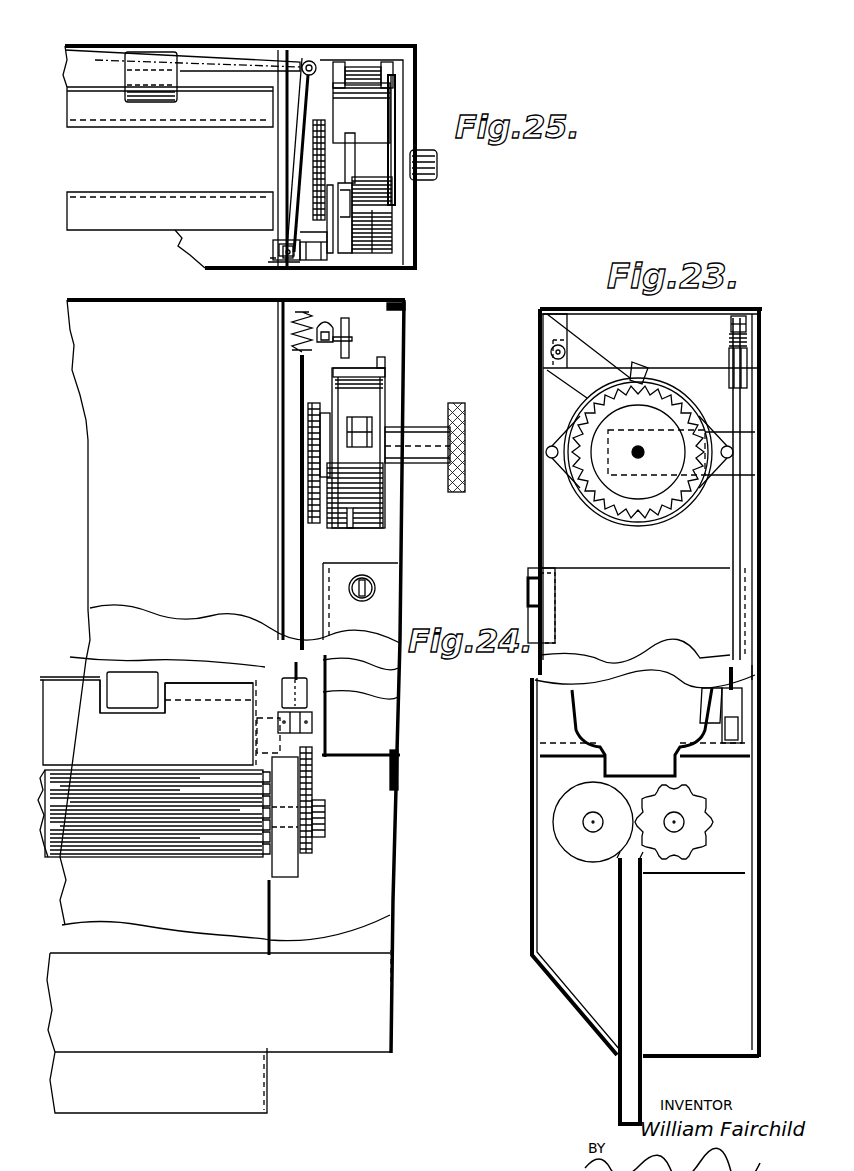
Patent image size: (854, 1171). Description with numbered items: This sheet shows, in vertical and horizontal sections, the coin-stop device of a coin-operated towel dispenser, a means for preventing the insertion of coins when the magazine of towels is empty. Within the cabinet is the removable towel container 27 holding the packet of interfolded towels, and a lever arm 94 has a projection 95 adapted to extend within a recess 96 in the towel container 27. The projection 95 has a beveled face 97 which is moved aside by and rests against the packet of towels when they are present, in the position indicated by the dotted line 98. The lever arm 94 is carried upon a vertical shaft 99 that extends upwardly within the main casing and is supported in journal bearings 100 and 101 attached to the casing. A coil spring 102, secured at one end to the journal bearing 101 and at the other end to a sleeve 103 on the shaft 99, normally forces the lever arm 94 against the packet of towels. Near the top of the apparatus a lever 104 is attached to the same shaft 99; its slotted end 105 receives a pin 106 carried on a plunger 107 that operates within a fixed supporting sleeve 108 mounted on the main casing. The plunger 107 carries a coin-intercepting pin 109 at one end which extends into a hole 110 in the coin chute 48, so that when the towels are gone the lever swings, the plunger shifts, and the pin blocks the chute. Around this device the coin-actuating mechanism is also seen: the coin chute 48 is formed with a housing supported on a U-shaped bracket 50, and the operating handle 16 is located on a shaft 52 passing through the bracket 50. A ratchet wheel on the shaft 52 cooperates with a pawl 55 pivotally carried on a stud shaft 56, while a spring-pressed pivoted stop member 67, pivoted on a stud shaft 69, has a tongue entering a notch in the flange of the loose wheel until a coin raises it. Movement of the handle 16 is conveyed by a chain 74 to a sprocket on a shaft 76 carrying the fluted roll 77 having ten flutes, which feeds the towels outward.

In FIG. 24, the operating handle 16 is at (466, 440).
In FIG. 24, the towel container 27 is at (161, 722).
In FIG. 25, the coin chute 48 is at (352, 230).
In FIG. 24, the coin chute 48 is at (353, 326).
In FIG. 23, the coin chute 48 is at (567, 338).
In FIG. 25, the U-shaped bracket 50 is at (410, 65).
In FIG. 25, the shaft 52 is at (430, 171).
In FIG. 24, the shaft 52 is at (418, 435).
In FIG. 25, the pawl 55 is at (394, 110).
In FIG. 24, the pawl 55 is at (383, 363).
In FIG. 23, the pawl 55 is at (641, 368).
In FIG. 25, the stud shaft 56 is at (368, 66).
In FIG. 23, the stud shaft 56 is at (734, 452).
In FIG. 24, the spring-pressed pivoted stop member 67 is at (333, 404).
In FIG. 24, the stud shaft 69 is at (358, 450).
In FIG. 25, the chain 74 is at (324, 212).
In FIG. 24, the chain 74 is at (313, 528).
In FIG. 24, the shaft 76 is at (326, 820).
In FIG. 25, the fluted roll 77 is at (348, 143).
In FIG. 25, the lever arm 94 is at (240, 68).
In FIG. 24, the lever arm 94 is at (188, 682).
In FIG. 25, the projection 95 is at (147, 68).
In FIG. 24, the projection 95 is at (135, 690).
In FIG. 24, the recess 96 is at (99, 677).
In FIG. 25, the beveled face 97 is at (155, 103).
In FIG. 23, the beveled face 97 is at (708, 704).
In FIG. 25, the dotted line 98 is at (198, 56).
In FIG. 25, the vertical shaft 99 is at (318, 62).
In FIG. 24, the vertical shaft 99 is at (298, 562).
In FIG. 23, the vertical shaft 99 is at (736, 597).
In FIG. 24, the journal bearing 100 is at (313, 718).
In FIG. 23, the journal bearing 101 is at (748, 360).
In FIG. 23, the coil spring 102 is at (748, 340).
In FIG. 23, the sleeve 103 is at (748, 324).
In FIG. 25, the lever 104 is at (300, 118).
In FIG. 25, the slotted end 105 is at (276, 250).
In FIG. 25, the pin 106 is at (286, 262).
In FIG. 25, the plunger 107 is at (272, 262).
In FIG. 25, the fixed supporting sleeve 108 is at (300, 240).
In FIG. 24, the fixed supporting sleeve 108 is at (300, 342).
In FIG. 25, the coin-intercepting pin 109 is at (330, 266).
In FIG. 24, the coin-intercepting pin 109 is at (325, 340).
In FIG. 23, the coin-intercepting pin 109 is at (540, 337).
In FIG. 24, the hole 110 is at (352, 325).